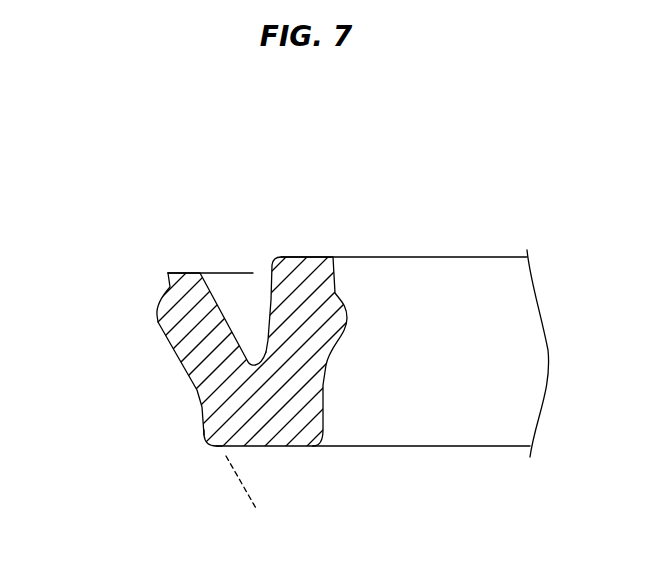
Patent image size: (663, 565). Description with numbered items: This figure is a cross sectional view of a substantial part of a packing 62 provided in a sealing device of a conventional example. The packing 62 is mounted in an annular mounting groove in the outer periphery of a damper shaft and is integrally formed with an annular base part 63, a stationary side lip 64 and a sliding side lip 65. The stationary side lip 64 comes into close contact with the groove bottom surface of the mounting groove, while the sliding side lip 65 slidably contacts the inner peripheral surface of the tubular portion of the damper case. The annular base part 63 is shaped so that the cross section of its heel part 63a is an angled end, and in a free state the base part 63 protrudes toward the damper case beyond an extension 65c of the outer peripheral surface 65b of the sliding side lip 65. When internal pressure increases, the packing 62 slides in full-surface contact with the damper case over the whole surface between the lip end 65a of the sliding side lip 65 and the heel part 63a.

The packing 62 is at (487, 250).
The annular base part 63 is at (263, 407).
The heel part 63a is at (210, 443).
The stationary side lip 64 is at (307, 272).
The sliding side lip 65 is at (188, 290).
The lip end 65a is at (158, 316).
The outer peripheral surface 65b is at (177, 363).
The extension 65c is at (243, 488).